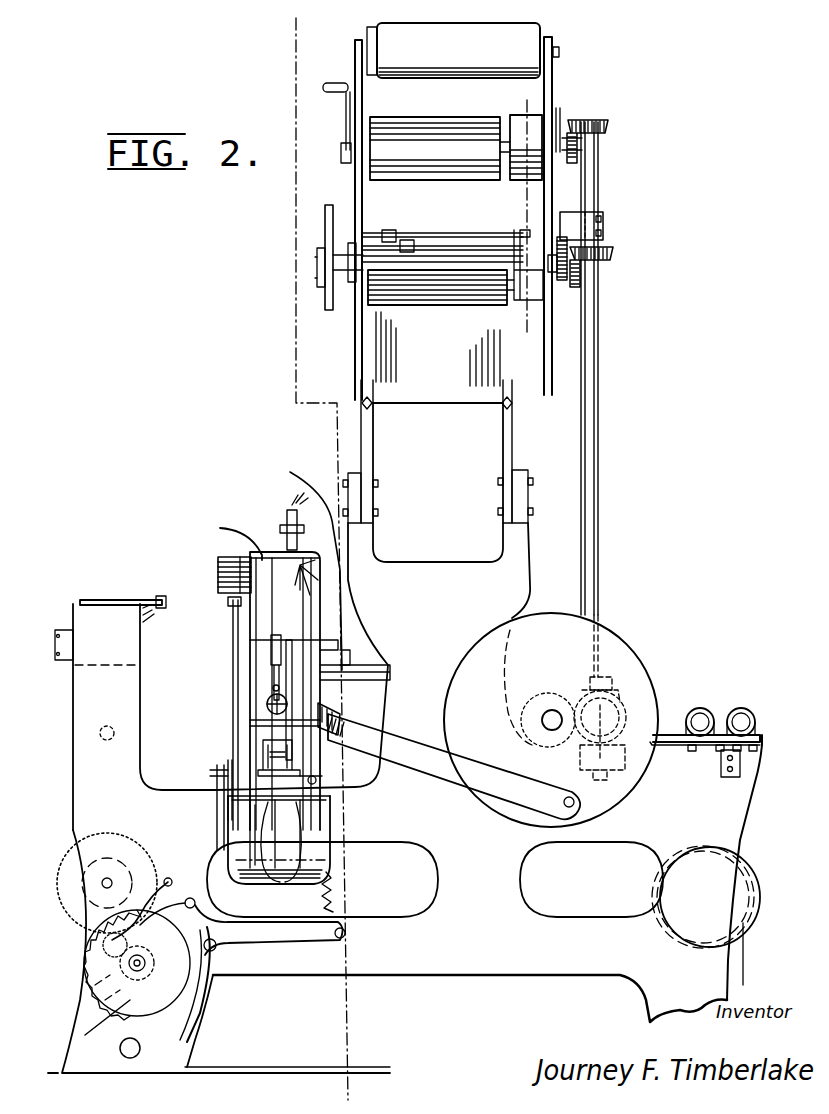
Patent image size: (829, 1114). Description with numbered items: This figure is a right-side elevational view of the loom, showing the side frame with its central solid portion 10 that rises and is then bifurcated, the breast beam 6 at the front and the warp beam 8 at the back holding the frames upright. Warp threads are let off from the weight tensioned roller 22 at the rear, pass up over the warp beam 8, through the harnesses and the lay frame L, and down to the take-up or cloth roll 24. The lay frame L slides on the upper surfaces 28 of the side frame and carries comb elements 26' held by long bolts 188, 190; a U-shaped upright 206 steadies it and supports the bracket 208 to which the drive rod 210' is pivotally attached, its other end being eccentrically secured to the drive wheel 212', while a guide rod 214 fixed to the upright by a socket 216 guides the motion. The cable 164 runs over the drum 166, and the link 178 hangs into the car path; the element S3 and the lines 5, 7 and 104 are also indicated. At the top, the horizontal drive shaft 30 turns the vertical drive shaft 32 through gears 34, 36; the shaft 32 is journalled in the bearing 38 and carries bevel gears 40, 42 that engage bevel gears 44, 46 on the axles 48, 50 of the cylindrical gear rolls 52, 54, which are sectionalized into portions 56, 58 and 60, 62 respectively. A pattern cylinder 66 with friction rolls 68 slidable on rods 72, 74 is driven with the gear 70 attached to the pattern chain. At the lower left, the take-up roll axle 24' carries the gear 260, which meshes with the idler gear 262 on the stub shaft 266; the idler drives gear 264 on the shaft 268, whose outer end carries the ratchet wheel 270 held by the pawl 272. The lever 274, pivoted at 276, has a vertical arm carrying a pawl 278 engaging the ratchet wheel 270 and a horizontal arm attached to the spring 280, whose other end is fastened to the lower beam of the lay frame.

The section line 5- 5 is at (380, 314).
The section line 7- 7 is at (537, 322).
The breast beam 6 is at (88, 608).
The warp beam 8 is at (745, 710).
The central solid portion 10 is at (510, 595).
The weight tensioned roller 22 is at (735, 905).
The take-up or cloth roll 24 is at (92, 874).
The take up roll axle 24' is at (112, 855).
The comb elements 26' is at (314, 691).
The upper surfaces 28 is at (180, 788).
The horizontal drive shaft 30 is at (550, 714).
The vertical drive shaft 32 is at (600, 455).
The gear 34 is at (610, 678).
The gear 36 is at (615, 706).
The bearing 38 is at (604, 222).
The bevel gear 40 is at (613, 253).
The bevel gear 42 is at (607, 127).
The bevel gear 44 is at (576, 290).
The bevel gear 46 is at (572, 128).
The axle 48 is at (566, 283).
The axle 50 is at (558, 140).
The cylindrical gear roll 52 is at (378, 294).
The cylindrical gear roll 54 is at (388, 160).
The section 56 is at (437, 308).
The section 58 is at (537, 302).
The section 60 is at (400, 182).
The section 62 is at (522, 183).
The pattern cylinder 66 is at (432, 235).
The friction rolls 68 is at (406, 240).
The gear 70 is at (349, 214).
The longitudinal rod or axle 72 is at (445, 240).
The longitudinal rod or axle 74 is at (537, 226).
The slots 104 is at (396, 356).
The cable 164 is at (255, 884).
The drum or reel 166 is at (296, 878).
The link 178 is at (233, 642).
The long bolt 188 is at (304, 560).
The long bolt 190 is at (322, 776).
The U-shaped steel upright 206 is at (293, 474).
The bracket 208 is at (330, 713).
The drive rod 210' is at (454, 774).
The drive wheel 212' is at (687, 770).
The guide rod 214 is at (375, 668).
The socket 216 is at (342, 670).
The gear 260 is at (78, 895).
The idler gear 262 is at (100, 962).
The gear 264 is at (105, 1000).
The stub shaft 266 is at (95, 945).
The shaft 268 is at (130, 965).
The ratchet wheel 270 is at (85, 1035).
The pawl 272 is at (150, 872).
The lever 274 is at (258, 940).
The pivot 276 is at (214, 950).
The pawl 278 is at (162, 895).
The spring 280 is at (334, 895).
The lay frame L is at (229, 537).
The solenoid S3 is at (218, 575).